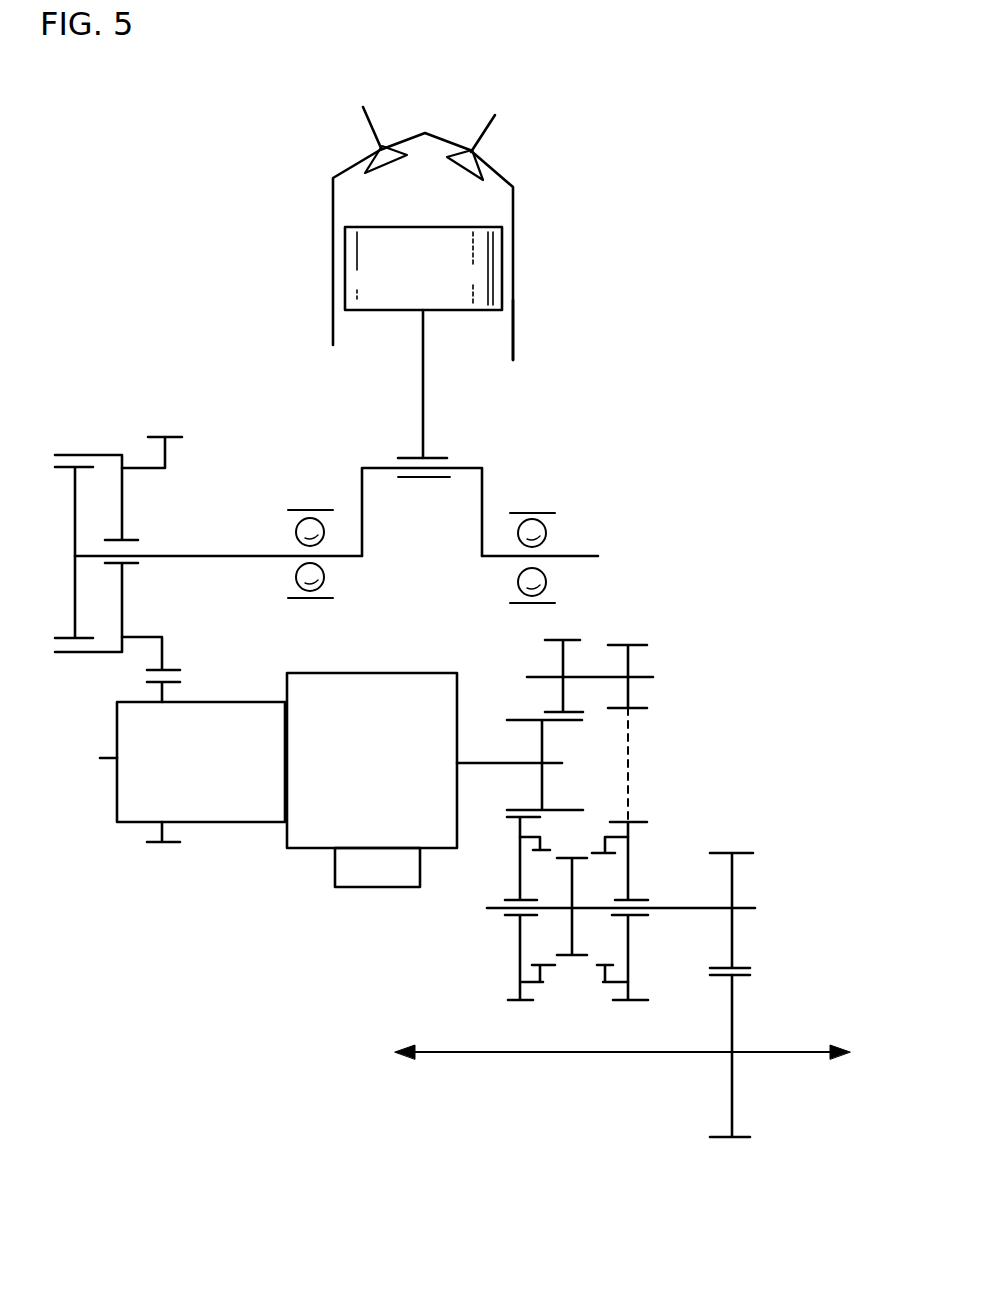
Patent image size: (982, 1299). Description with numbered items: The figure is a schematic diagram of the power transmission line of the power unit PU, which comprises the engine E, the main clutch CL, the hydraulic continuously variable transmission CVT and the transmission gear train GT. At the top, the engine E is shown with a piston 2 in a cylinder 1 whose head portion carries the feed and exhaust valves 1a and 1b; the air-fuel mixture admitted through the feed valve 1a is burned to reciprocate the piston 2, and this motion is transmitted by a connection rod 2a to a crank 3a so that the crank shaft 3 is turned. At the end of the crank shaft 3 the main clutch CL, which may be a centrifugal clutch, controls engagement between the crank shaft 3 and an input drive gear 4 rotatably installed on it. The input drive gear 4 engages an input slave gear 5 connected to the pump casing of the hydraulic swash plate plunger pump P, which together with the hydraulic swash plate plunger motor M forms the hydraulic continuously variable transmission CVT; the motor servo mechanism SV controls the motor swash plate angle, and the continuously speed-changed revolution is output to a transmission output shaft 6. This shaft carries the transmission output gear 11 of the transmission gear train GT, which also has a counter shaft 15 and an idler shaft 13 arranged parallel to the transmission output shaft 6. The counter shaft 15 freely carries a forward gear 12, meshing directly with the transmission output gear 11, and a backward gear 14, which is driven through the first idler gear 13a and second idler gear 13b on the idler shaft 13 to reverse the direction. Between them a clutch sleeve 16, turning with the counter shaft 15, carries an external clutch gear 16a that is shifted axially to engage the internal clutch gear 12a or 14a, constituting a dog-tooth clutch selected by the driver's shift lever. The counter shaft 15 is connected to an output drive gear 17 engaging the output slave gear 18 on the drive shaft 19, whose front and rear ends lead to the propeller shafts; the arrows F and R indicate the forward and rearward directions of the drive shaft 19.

The cylinder 1 is at (513, 326).
The feed valve 1a is at (492, 128).
The exhaust valve 1b is at (366, 110).
The piston 2 is at (431, 287).
The connection rod 2a is at (424, 380).
The crank shaft 3 is at (228, 555).
The crank 3a is at (482, 468).
The input drive gear 4 is at (180, 437).
The input slave gear 5 is at (173, 842).
The transmission output shaft 6 is at (490, 760).
The transmission output gear 11 is at (518, 718).
The forward gear 12 is at (517, 998).
The internal clutch gear 12a is at (537, 965).
The idler shaft 13 is at (643, 675).
The first idler gear 13a is at (570, 640).
The second idler gear 13b is at (638, 643).
The backward gear 14 is at (645, 1000).
The internal clutch gear 14a is at (610, 962).
The counter shaft 15 is at (673, 908).
The clutch sleeve 16 is at (568, 878).
The external clutch gear 16a is at (572, 958).
The output drive gear 17 is at (747, 852).
The output slave gear 18 is at (722, 1140).
The drive shaft 19 is at (663, 1057).
The engine E is at (540, 263).
The power unit PU is at (702, 306).
The main clutch CL is at (48, 496).
The hydraulic continuously variable transmission CVT is at (245, 911).
The hydraulic swash plate plunger pump P is at (212, 773).
The hydraulic swash plate plunger motor M is at (390, 770).
The motor servo mechanism SV is at (367, 875).
The transmission gear train GT is at (667, 814).
The forward direction F is at (376, 1052).
The reverse direction R is at (871, 1052).